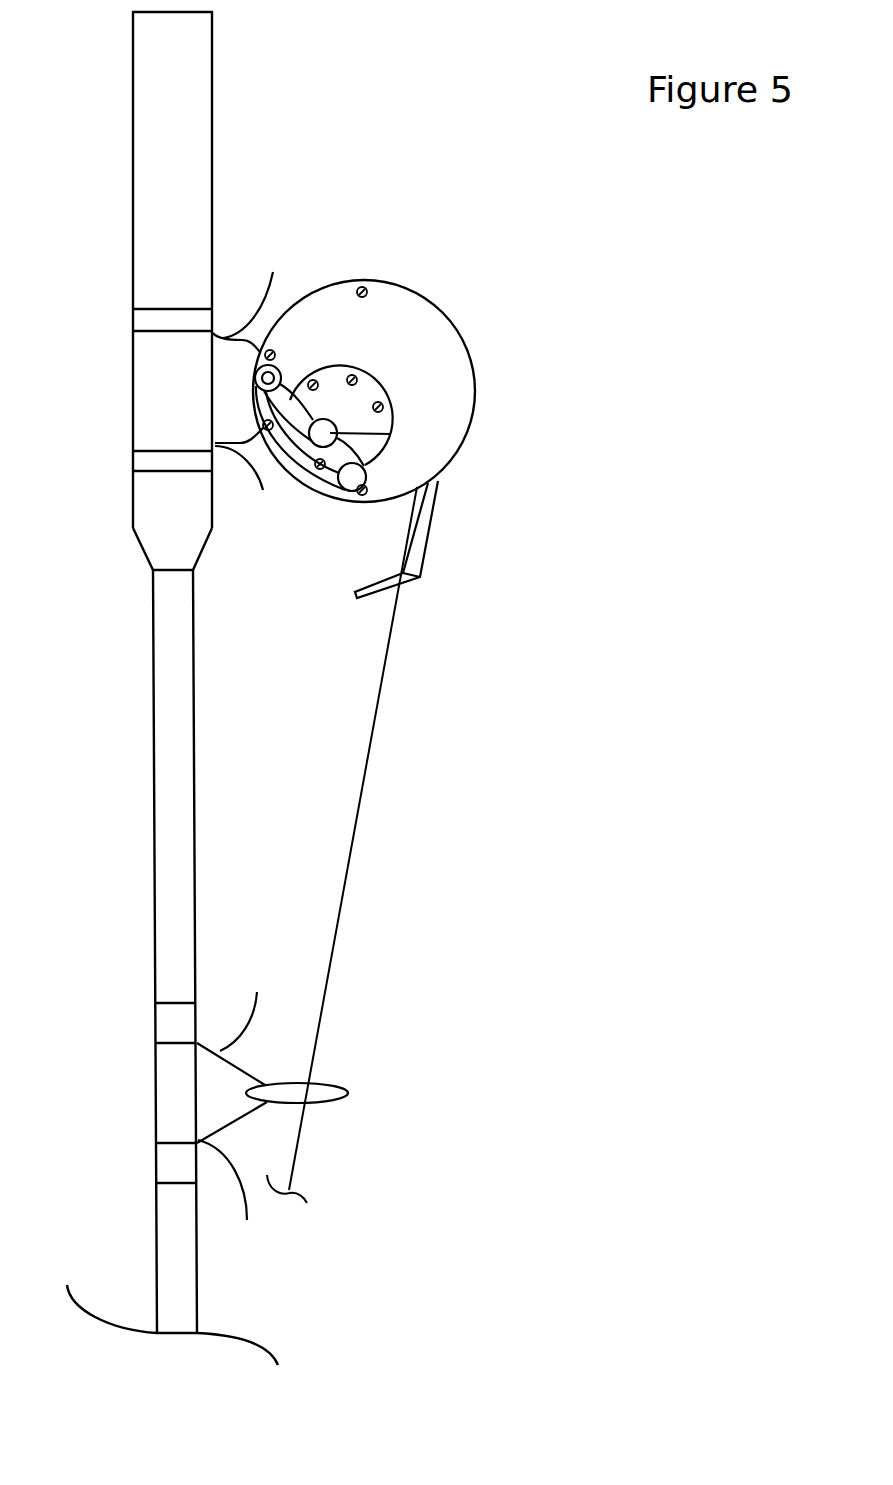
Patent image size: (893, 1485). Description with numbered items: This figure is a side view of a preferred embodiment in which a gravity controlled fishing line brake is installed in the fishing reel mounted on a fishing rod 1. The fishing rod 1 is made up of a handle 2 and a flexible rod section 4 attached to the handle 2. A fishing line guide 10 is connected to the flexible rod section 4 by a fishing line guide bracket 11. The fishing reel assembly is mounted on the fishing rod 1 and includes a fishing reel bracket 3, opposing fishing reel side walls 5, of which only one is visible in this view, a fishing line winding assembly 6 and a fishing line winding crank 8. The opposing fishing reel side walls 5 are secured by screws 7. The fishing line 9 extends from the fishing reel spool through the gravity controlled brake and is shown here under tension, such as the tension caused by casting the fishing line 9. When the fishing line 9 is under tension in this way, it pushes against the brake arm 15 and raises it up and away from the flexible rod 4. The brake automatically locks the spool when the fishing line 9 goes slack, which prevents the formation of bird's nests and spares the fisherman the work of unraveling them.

The fishing rod 1 is at (403, 141).
The handle 2 is at (192, 110).
The fishing reel bracket 3 is at (200, 319).
The flexible rod section 4 is at (173, 640).
The fishing reel side walls 5 is at (453, 420).
The fishing line winding assembly 6 is at (366, 386).
The screws 7 is at (363, 300).
The fishing line winding crank 8 is at (385, 447).
The fishing line 9 is at (382, 710).
The fishing line guide 10 is at (328, 1093).
The fishing line guide bracket 11 is at (185, 1022).
The brake arm 15 is at (437, 500).